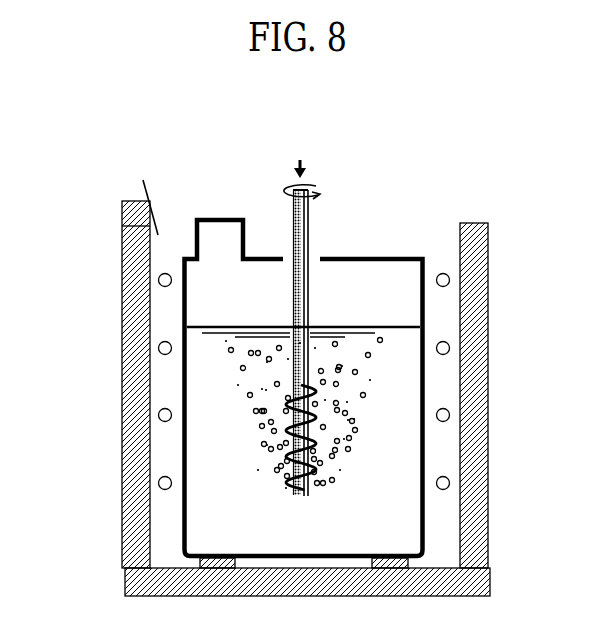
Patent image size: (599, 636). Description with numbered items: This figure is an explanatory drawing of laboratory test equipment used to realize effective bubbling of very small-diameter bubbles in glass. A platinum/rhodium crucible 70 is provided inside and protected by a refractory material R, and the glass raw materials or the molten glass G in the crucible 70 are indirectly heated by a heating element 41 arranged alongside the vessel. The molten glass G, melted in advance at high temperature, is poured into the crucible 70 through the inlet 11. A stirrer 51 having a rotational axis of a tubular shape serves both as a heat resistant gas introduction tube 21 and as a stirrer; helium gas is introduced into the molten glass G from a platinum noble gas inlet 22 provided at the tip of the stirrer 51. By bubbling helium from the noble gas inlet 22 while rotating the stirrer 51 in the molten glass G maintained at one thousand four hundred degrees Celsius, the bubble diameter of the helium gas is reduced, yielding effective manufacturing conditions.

The inlet 11 is at (220, 218).
The heat resistant gas introduction tube 21 is at (305, 232).
The noble gas inlet 22 is at (310, 487).
The heating element 41 is at (158, 483).
The stirrer 51 is at (306, 218).
The crucible 70 is at (432, 390).
The refractory material R is at (140, 282).
The molten glass G is at (236, 450).